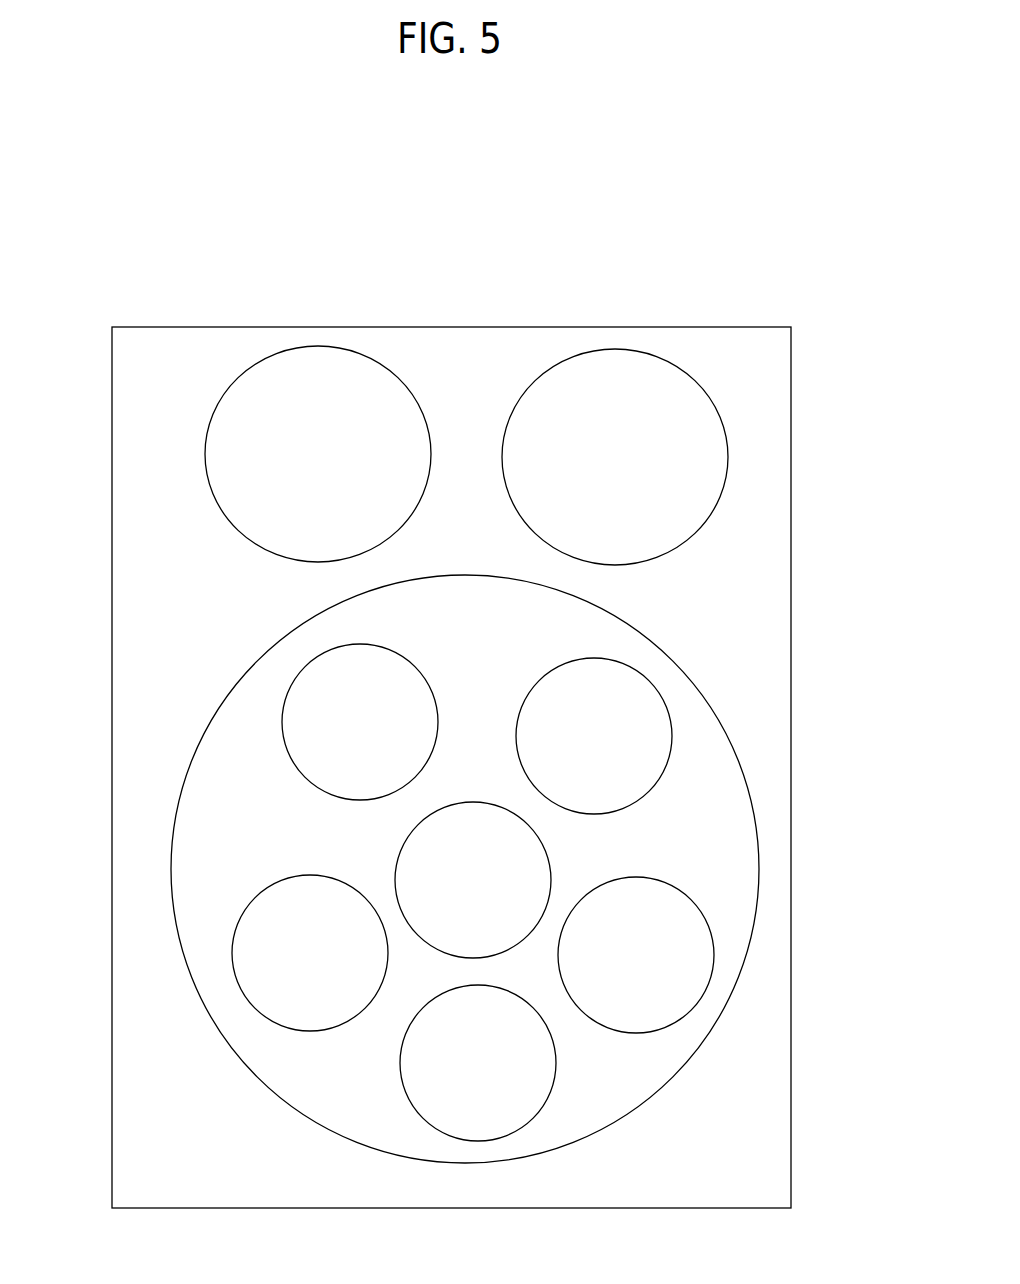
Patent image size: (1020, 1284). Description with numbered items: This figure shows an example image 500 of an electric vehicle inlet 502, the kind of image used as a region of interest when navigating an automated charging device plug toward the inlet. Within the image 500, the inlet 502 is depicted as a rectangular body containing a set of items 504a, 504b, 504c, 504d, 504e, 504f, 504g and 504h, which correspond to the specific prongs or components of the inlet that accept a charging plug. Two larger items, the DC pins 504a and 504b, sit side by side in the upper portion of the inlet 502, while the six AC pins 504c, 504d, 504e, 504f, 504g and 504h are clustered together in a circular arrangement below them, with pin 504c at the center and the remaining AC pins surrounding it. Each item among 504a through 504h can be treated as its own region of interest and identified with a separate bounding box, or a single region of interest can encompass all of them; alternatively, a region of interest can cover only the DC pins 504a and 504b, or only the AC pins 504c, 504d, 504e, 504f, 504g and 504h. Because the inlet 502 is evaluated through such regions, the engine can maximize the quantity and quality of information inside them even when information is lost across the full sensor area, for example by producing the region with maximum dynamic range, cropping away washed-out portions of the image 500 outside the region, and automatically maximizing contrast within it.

The image 500 is at (196, 190).
The inlet 502 is at (205, 327).
The DC pin 504a is at (322, 347).
The DC pin 504b is at (586, 352).
The AC pin 504c is at (552, 879).
The AC pin 504d is at (652, 683).
The AC pin 504e is at (718, 953).
The AC pin 504f is at (557, 1064).
The AC pin 504g is at (232, 956).
The AC pin 504h is at (278, 723).